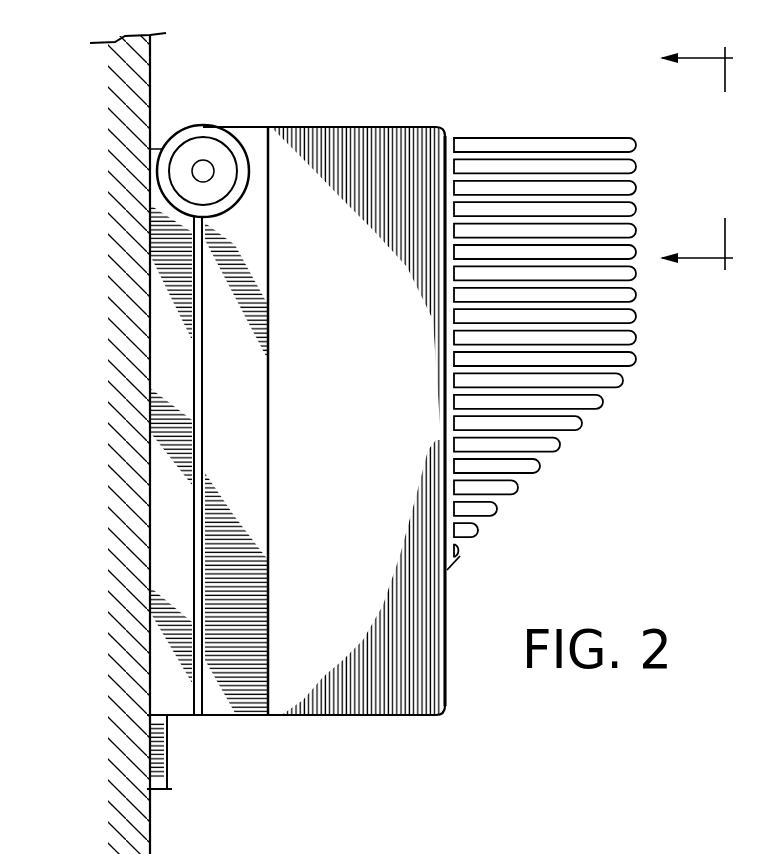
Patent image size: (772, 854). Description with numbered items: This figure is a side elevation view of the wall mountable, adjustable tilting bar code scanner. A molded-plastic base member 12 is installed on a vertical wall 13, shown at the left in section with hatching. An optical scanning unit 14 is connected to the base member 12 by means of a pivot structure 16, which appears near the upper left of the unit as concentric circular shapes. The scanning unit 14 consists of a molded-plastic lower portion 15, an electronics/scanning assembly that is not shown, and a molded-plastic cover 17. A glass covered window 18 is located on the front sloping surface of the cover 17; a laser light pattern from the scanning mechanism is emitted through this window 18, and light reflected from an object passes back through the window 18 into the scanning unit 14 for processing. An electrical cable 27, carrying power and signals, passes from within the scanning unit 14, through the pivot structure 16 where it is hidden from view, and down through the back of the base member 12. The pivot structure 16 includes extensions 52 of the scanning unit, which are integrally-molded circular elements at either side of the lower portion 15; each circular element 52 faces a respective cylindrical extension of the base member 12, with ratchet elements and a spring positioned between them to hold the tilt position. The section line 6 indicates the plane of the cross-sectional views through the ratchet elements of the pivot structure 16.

The section line 6— 6 is at (711, 160).
The base member 12 is at (170, 338).
The vertical wall 13 is at (152, 66).
The optical scanning unit 14 is at (541, 307).
The lower portion 15 is at (220, 707).
The pivot structure 16 is at (230, 123).
The cover 17 is at (356, 138).
The window 18 is at (542, 462).
The electrical cable 27 is at (153, 760).
The circular element 52 is at (198, 152).